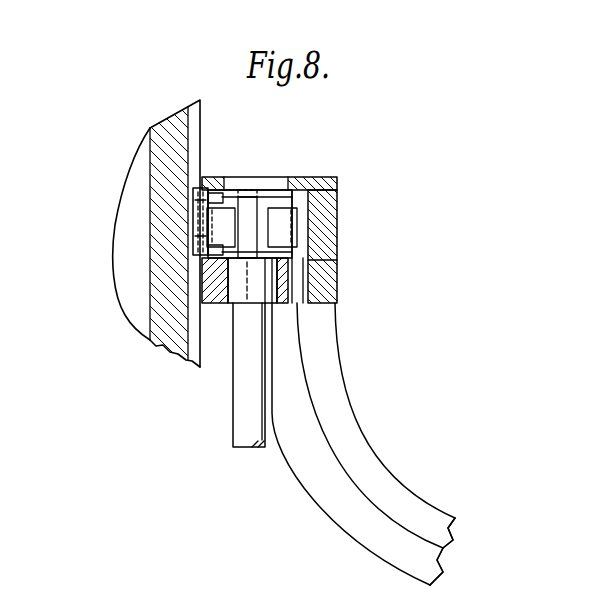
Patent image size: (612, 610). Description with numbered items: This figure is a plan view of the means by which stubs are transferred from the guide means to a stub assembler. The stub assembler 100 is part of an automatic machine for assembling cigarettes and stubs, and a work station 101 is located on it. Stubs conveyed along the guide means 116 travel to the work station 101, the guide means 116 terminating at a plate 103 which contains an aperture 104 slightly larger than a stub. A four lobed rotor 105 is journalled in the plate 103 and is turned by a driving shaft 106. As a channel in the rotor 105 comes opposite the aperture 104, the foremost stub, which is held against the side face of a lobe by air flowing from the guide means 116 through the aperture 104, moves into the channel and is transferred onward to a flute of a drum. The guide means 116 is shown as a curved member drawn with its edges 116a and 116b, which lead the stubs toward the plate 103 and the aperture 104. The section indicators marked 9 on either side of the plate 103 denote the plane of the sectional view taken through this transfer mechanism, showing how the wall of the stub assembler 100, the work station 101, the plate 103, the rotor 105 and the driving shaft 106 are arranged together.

The section line 9- 9 is at (140, 190).
The stub assembler 100 is at (208, 150).
The work station 101 is at (186, 224).
The plate 103 is at (207, 297).
The aperture 104 is at (305, 303).
The four lobed rotor 105 is at (278, 230).
The driving shaft 106 is at (243, 396).
The guide means 116 is at (373, 459).
The arm inner edge 116a is at (415, 565).
The arm outer edge 116b is at (432, 527).